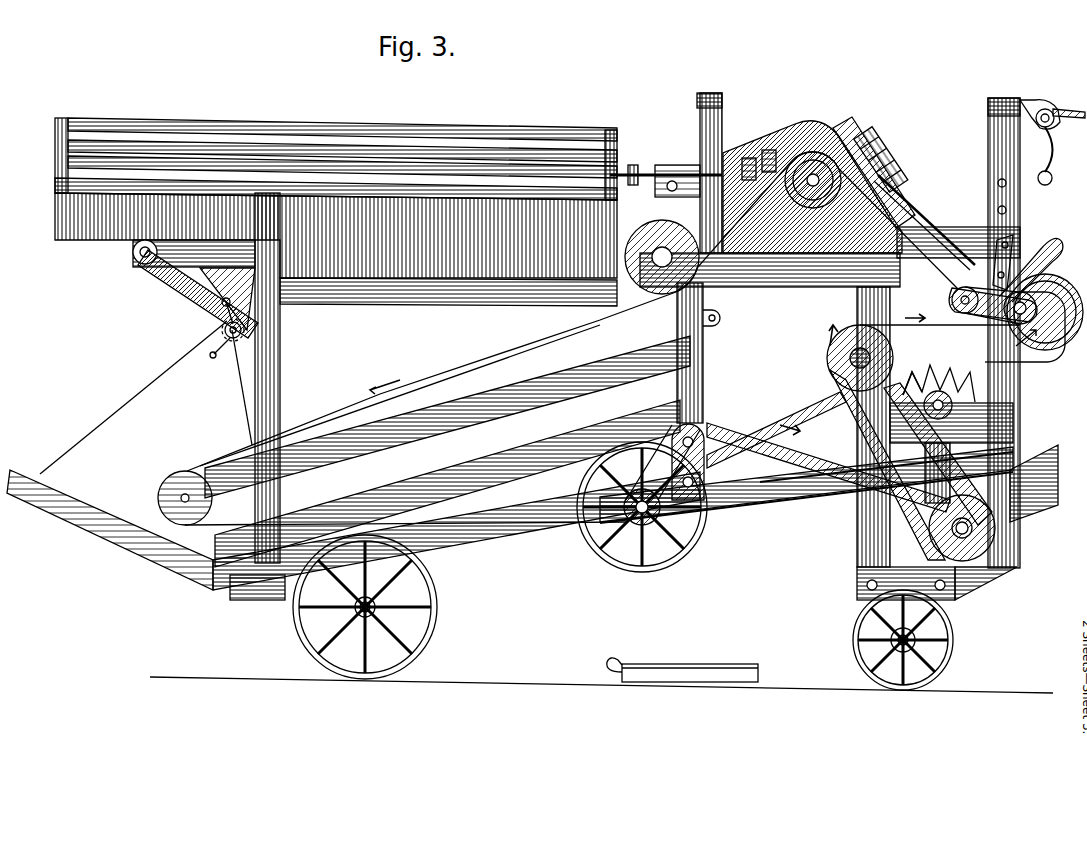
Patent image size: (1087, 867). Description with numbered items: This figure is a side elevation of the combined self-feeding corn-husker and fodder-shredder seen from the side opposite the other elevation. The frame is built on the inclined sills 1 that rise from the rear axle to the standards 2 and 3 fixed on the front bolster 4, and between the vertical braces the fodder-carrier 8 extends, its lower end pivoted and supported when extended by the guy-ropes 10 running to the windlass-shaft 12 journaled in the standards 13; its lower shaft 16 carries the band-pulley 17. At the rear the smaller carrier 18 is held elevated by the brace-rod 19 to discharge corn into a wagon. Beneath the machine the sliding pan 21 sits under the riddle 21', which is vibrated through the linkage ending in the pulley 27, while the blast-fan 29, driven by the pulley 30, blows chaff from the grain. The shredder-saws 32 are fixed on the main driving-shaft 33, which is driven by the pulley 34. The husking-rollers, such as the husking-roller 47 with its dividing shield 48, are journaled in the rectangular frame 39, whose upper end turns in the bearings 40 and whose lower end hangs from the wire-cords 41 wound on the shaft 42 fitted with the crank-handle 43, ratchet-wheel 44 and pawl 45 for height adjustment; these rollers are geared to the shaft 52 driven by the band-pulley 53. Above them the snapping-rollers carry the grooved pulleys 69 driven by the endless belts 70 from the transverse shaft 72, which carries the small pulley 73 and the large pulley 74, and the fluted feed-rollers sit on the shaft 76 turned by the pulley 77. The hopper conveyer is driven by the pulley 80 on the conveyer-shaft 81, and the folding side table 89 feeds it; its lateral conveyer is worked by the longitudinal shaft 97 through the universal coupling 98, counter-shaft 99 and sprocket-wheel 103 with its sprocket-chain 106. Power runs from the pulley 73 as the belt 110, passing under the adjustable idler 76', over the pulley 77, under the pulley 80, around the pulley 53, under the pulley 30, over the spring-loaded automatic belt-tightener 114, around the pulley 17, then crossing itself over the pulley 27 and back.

The side table 89 is at (321, 340).
The sprocket-wheel 103 is at (633, 165).
The longitudinal shaft 97 is at (660, 174).
The universal coupling 98 is at (748, 158).
The counter-shaft 99 is at (768, 150).
The feed-roller shaft 76 is at (813, 149).
The pulley 77 is at (823, 198).
The grooved pulley 69 is at (888, 146).
The endless belt 70 is at (940, 218).
The standard 13 is at (1022, 104).
The guy-rope 10 is at (1066, 110).
The windlass-shaft 12 is at (1050, 128).
The conveyer-shaft 81 is at (662, 254).
The pulley 80 is at (660, 293).
The bearing 40 is at (712, 320).
The pulley 27 is at (851, 340).
The belt 110 is at (908, 324).
The adjustable idler 76' is at (1001, 278).
The transverse shaft 72 is at (1026, 300).
The large pulley 74 is at (1045, 312).
The small pulley 73 is at (1045, 312).
The sprocket-chain 106 is at (1023, 380).
The pulley 34 is at (936, 388).
The main driving-shaft 33 is at (915, 385).
The shredder-saw 32 is at (949, 395).
The fodder-carrier 8 is at (1033, 466).
The standard 3 is at (950, 462).
The standard 2 is at (806, 486).
The riddle 21' is at (886, 478).
The inclined sill 1 is at (788, 483).
The automatic belt-tightener 114 is at (811, 426).
The pulley 30 is at (632, 556).
The blast-fan 29 is at (644, 516).
The shaft 16 is at (975, 532).
The band-pulley 17 is at (978, 548).
The front bolster 4 is at (952, 600).
The sliding pan 21 is at (682, 654).
The shaft 42 is at (252, 340).
The pawl 45 is at (232, 312).
The ratchet-wheel 44 is at (223, 330).
The crank-handle 43 is at (212, 357).
The wire-cord 41 is at (246, 394).
The brace-rod 19 is at (134, 380).
The carrier 18 is at (90, 512).
The band-pulley 53 is at (172, 490).
The shaft 52 is at (185, 522).
The husking-roller 47 is at (475, 408).
The shield 48 is at (418, 414).
The rectangular frame 39 is at (556, 398).